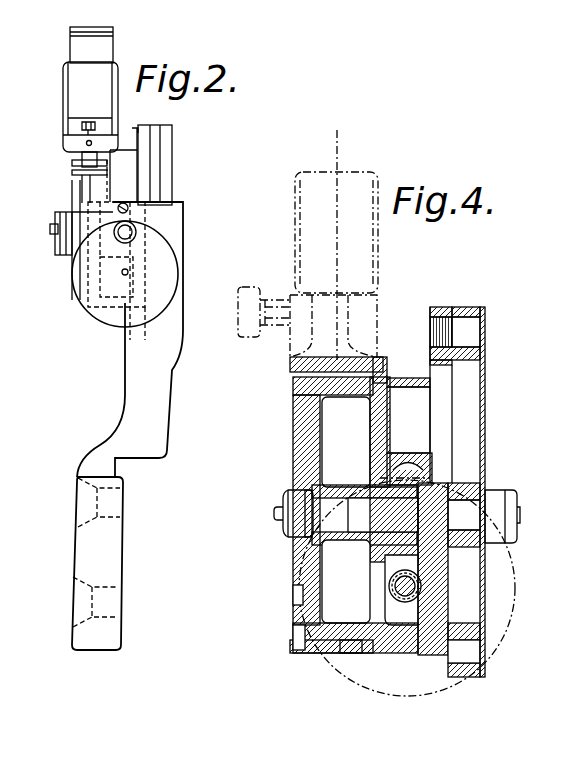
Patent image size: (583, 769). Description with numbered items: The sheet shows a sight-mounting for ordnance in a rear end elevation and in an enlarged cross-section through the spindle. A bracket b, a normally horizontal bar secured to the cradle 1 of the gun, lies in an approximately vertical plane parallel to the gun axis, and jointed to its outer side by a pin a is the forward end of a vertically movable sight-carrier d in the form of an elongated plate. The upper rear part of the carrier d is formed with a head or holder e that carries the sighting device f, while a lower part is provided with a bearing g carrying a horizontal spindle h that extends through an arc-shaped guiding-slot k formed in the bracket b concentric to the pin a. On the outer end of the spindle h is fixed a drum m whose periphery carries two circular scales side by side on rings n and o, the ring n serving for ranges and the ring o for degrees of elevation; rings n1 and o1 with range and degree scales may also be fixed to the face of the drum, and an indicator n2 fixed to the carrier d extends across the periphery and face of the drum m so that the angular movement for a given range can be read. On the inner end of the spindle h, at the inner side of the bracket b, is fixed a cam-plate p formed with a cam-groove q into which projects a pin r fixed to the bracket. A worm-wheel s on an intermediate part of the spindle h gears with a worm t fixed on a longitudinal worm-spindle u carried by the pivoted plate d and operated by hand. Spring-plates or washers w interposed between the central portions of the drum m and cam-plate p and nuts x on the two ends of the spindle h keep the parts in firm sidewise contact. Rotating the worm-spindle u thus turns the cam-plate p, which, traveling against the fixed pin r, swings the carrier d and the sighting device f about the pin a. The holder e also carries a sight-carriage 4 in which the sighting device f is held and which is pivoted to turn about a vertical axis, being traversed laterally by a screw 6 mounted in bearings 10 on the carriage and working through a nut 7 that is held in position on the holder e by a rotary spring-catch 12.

In FIG. 2, the cradle 1 is at (147, 418).
In FIG. 2, the sight-carriage 4 is at (88, 118).
In FIG. 4, the sight-carriage 4 is at (298, 222).
In FIG. 4, the traversing screw 6 is at (262, 307).
In FIG. 4, the nut 7 is at (333, 326).
In FIG. 4, the bearings 10 is at (270, 327).
In FIG. 2, the spring-catch 12 is at (76, 175).
In FIG. 2, the pin a is at (80, 133).
In FIG. 2, the bracket b is at (170, 174).
In FIG. 4, the bracket b is at (456, 603).
In FIG. 2, the sight-carrier d is at (127, 302).
In FIG. 4, the sight-carrier d is at (378, 437).
In FIG. 4, the holder e is at (290, 362).
In FIG. 2, the sighting device f is at (95, 48).
In FIG. 4, the bearing g is at (370, 555).
In FIG. 4, the spindle h is at (396, 515).
In FIG. 4, the guiding-slot k is at (432, 417).
In FIG. 4, the drum m is at (333, 501).
In FIG. 4, the ring n is at (317, 652).
In FIG. 4, the ring n1 is at (293, 634).
In FIG. 2, the indicator n2 is at (72, 215).
In FIG. 4, the ring o is at (369, 647).
In FIG. 4, the ring o1 is at (292, 598).
In FIG. 2, the cam-plate p is at (163, 143).
In FIG. 4, the cam-plate p is at (457, 492).
In FIG. 4, the cam-groove q is at (467, 650).
In FIG. 2, the pin r is at (115, 312).
In FIG. 4, the pin r is at (466, 332).
In FIG. 4, the worm-wheel s is at (410, 462).
In FIG. 4, the worm t is at (401, 595).
In FIG. 2, the worm-spindle u is at (113, 278).
In FIG. 4, the worm-spindle u is at (413, 588).
In FIG. 4, the spring-plates or washers w is at (307, 548).
In FIG. 4, the nuts x is at (297, 505).